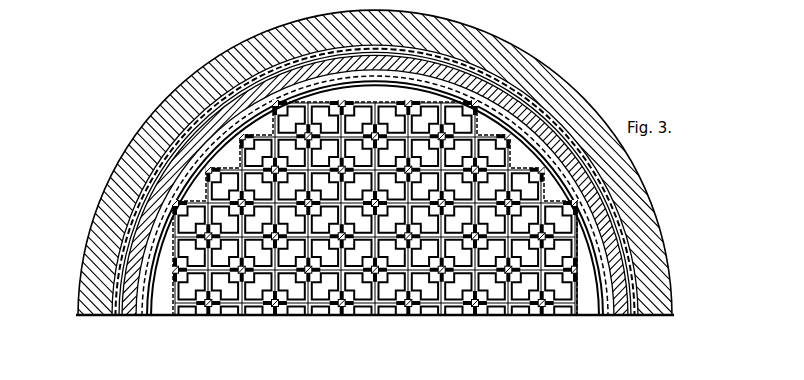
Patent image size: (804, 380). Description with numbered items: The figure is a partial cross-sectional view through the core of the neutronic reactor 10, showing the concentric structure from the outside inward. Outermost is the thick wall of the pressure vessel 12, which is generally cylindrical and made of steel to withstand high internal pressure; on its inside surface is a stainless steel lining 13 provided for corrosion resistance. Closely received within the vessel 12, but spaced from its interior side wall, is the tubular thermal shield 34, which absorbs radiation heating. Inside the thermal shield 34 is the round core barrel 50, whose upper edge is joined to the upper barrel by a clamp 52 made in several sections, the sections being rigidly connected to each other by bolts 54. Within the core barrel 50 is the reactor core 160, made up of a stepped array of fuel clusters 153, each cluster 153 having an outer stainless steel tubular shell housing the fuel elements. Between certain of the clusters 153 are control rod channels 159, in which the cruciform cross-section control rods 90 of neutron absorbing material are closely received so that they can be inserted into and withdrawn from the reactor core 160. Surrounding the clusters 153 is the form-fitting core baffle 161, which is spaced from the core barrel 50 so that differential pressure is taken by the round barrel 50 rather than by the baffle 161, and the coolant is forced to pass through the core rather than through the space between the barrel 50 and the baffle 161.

The neutronic reactor 10 is at (610, 95).
The pressure vessel 12 is at (655, 249).
The stainless steel lining 13 is at (637, 272).
The thermal shield 34 is at (494, 82).
The core barrel 50 is at (152, 313).
The clamp 52 is at (128, 270).
The bolts 54 is at (208, 106).
The control rods 90 is at (375, 219).
The clusters 153 is at (388, 103).
The control rod channels 159 is at (268, 306).
The reactor core 160 is at (410, 334).
The core baffle 161 is at (588, 308).